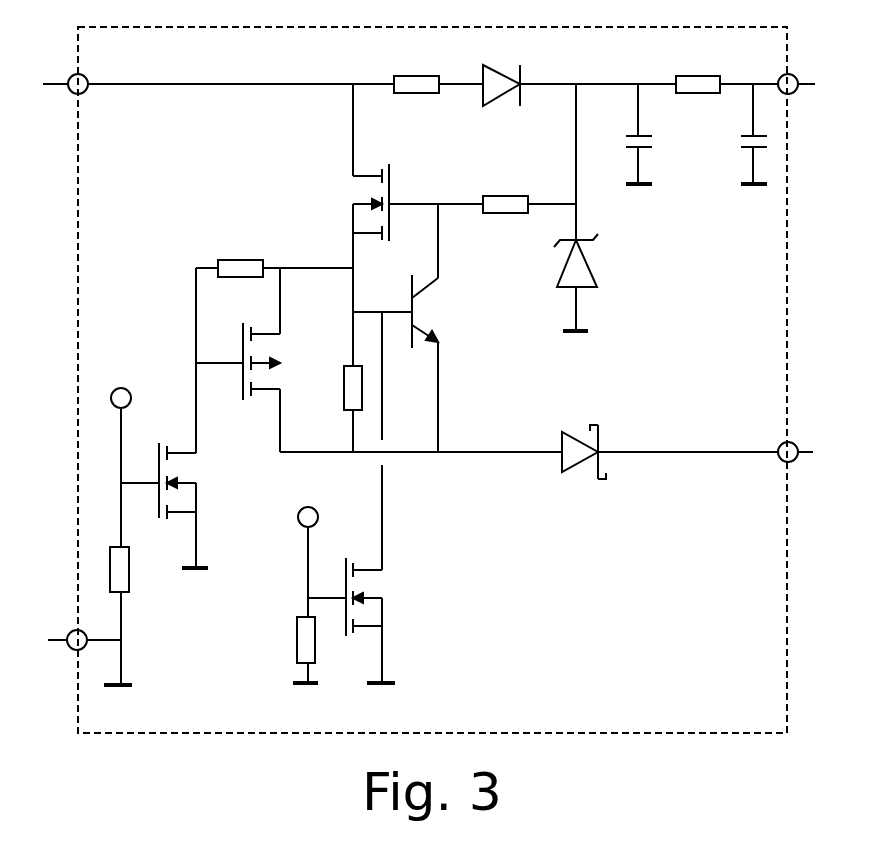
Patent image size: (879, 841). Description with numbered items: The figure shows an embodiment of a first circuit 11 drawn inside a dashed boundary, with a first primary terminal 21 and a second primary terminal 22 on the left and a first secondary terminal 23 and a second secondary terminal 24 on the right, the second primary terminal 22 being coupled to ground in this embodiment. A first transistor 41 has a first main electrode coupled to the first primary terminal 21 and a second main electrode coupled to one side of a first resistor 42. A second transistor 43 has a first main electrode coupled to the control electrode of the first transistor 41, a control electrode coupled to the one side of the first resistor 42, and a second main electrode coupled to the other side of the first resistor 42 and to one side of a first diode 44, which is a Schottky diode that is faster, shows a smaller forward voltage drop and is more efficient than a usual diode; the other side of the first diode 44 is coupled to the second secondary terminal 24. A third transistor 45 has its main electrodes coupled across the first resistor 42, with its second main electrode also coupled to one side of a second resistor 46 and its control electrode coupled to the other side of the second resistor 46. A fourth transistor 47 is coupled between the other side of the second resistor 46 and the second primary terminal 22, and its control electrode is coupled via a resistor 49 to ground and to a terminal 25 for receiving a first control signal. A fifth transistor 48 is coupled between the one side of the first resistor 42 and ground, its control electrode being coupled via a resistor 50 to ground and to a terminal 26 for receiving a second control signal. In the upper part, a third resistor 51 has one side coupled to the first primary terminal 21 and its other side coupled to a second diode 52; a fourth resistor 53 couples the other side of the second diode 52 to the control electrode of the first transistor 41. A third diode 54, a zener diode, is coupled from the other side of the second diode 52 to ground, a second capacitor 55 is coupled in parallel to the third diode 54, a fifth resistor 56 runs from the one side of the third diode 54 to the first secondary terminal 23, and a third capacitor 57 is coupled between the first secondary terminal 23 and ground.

The first circuit 11 is at (751, 733).
The first primary terminal 21 is at (65, 72).
The second primary terminal 22 is at (65, 655).
The first secondary terminal 23 is at (803, 72).
The second secondary terminal 24 is at (803, 465).
The terminal 25 is at (124, 381).
The terminal 26 is at (309, 503).
The first transistor 41 is at (392, 202).
The first resistor 42 is at (335, 388).
The second transistor 43 is at (436, 311).
The first diode 44 is at (584, 475).
The third transistor 45 is at (257, 378).
The second resistor 46 is at (240, 252).
The fourth transistor 47 is at (199, 481).
The fifth transistor 48 is at (386, 597).
The resistor 49 is at (140, 569).
The resistor 50 is at (288, 640).
The third resistor 51 is at (416, 67).
The second diode 52 is at (501, 71).
The fourth resistor 53 is at (505, 223).
The third diode 54 is at (596, 282).
The second capacitor 55 is at (653, 134).
The fifth resistor 56 is at (698, 68).
The third capacitor 57 is at (740, 134).